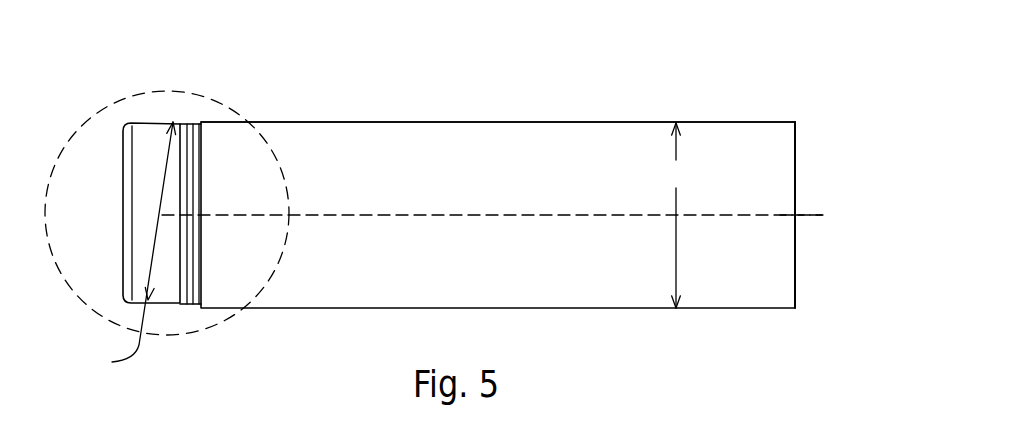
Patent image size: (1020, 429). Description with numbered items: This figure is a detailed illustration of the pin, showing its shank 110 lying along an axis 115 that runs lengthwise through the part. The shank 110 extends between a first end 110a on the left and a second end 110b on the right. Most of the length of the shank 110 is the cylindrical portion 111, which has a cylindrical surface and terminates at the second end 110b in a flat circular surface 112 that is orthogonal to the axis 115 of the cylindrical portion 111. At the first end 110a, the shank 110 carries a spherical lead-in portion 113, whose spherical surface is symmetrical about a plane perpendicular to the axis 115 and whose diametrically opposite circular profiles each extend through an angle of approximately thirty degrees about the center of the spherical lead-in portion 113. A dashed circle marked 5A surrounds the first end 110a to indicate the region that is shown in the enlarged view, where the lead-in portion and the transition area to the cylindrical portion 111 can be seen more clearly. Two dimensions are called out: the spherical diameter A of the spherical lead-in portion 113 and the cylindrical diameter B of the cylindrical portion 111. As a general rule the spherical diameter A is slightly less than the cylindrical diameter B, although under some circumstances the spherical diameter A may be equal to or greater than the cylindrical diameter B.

The shank 110 is at (388, 320).
The first end 110a is at (162, 120).
The second end 110b is at (810, 143).
The cylindrical portion 111 is at (498, 122).
The flat circular surface 112 is at (795, 282).
The spherical lead-in portion 113 is at (168, 294).
The axis 115 is at (802, 216).
The enlarged view 5A is at (207, 100).
The spherical diameter A is at (135, 247).
The cylindrical diameter B is at (676, 215).